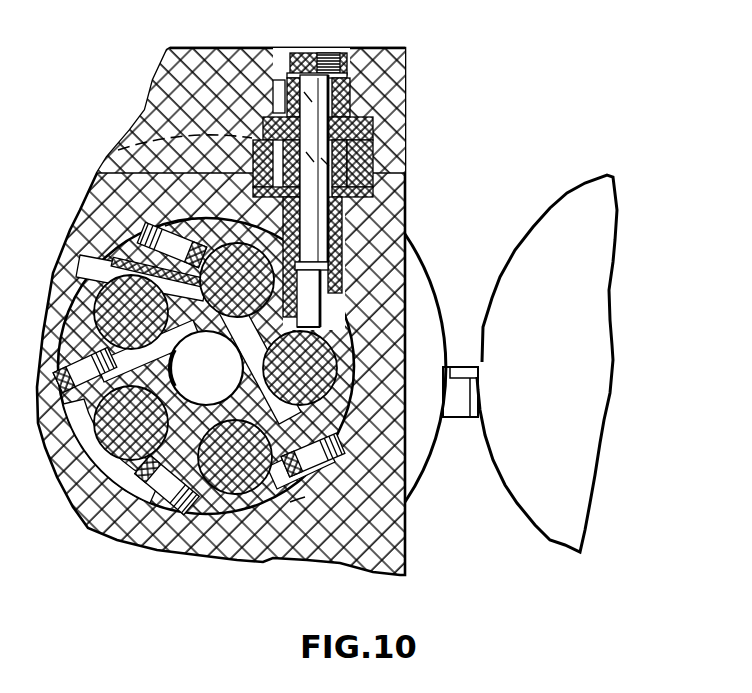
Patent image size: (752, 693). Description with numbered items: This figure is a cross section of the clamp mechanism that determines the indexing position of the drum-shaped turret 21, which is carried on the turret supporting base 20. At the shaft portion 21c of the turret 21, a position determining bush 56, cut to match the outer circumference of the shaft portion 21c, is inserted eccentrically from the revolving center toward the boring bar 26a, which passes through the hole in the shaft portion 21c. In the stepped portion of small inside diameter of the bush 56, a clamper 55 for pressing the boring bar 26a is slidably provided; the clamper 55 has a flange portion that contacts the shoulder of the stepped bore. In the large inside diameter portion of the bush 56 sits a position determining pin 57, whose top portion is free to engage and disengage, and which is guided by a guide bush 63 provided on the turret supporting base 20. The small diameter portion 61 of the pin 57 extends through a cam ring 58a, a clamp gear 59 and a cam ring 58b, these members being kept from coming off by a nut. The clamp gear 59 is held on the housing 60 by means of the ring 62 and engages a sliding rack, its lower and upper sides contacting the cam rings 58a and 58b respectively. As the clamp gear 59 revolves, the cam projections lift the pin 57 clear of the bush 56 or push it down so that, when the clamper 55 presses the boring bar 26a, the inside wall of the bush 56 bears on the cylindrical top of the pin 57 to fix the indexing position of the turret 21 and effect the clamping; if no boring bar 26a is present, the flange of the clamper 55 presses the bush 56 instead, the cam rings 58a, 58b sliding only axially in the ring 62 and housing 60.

The turret supporting base 20 is at (383, 513).
The drum-shaped turret 21 is at (262, 503).
The shaft portion 21c is at (293, 505).
The boring bar 26a is at (365, 410).
The clamper 55 is at (322, 327).
The position determining bush 56 is at (338, 292).
The position determining pin 57 is at (324, 240).
The cam ring 58a is at (373, 177).
The cam ring 58b is at (345, 90).
The clamp gear 59 is at (366, 127).
The housing 60 is at (390, 85).
The small diameter portion 61 is at (304, 56).
The ring 62 is at (362, 157).
The guide bush 63 is at (187, 217).